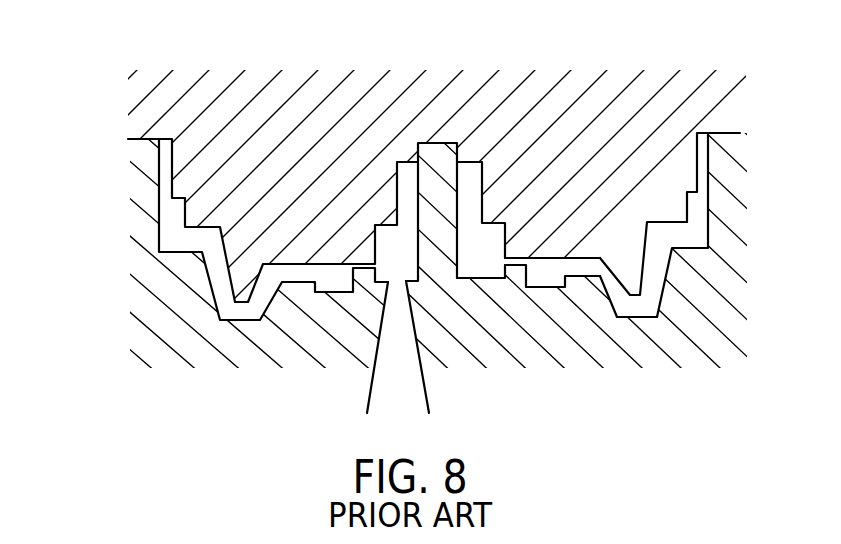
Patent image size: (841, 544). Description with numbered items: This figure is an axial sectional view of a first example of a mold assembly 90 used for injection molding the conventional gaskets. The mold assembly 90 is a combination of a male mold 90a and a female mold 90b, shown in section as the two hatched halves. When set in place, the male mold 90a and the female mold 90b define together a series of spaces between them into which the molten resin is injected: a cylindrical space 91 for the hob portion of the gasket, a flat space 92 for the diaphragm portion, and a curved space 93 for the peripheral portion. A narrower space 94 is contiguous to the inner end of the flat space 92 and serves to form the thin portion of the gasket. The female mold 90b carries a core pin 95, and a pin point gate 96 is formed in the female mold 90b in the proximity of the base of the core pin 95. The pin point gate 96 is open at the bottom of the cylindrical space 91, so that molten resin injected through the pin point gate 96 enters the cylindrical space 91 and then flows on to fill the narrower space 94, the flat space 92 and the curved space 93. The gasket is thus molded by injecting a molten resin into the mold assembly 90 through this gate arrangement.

The mold assembly 90 is at (100, 164).
The male mold 90a is at (138, 117).
The female mold 90b is at (138, 323).
The cylindrical space 91 is at (470, 170).
The flat space 92 is at (583, 272).
The curved space 93 is at (700, 238).
The narrower space 94 is at (515, 263).
The core pin 95 is at (440, 143).
The pin point gate 96 is at (427, 396).